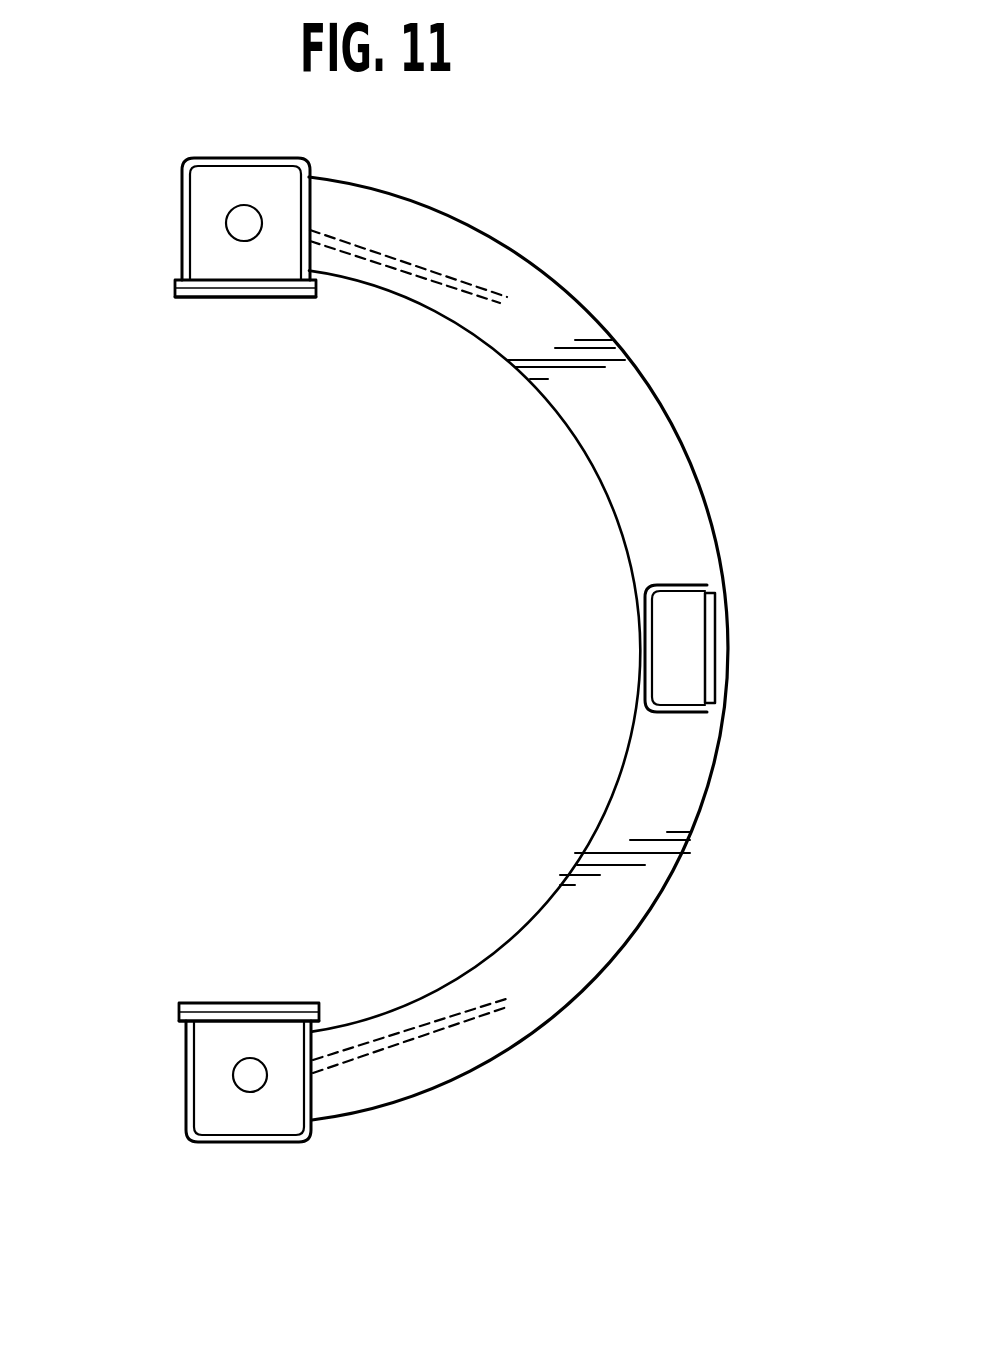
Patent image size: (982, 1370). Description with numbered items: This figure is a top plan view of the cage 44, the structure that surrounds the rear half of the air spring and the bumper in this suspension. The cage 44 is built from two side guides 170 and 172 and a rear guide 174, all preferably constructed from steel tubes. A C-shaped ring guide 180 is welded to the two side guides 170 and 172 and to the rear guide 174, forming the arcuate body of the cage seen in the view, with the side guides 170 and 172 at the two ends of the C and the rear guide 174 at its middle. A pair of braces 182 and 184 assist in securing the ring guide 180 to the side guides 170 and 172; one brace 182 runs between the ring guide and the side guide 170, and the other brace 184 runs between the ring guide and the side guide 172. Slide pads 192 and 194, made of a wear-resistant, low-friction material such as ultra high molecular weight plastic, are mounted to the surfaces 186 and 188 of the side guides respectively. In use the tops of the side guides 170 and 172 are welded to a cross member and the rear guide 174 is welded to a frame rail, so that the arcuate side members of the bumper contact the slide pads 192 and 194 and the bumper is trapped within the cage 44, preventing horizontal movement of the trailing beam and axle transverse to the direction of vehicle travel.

The cage 44 is at (708, 296).
The side guide 170 is at (275, 1143).
The side guide 172 is at (222, 158).
The rear guide 174 is at (692, 583).
The C-shaped ring guide 180 is at (708, 785).
The brace 182 is at (450, 1025).
The brace 184 is at (457, 277).
The surface 186 is at (180, 1010).
The surface 188 is at (176, 283).
The slide pad 192 is at (250, 1003).
The slide pad 194 is at (276, 298).